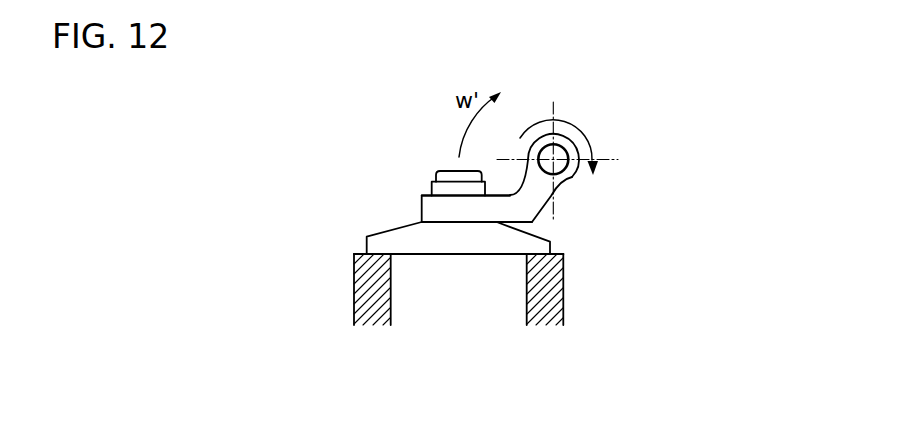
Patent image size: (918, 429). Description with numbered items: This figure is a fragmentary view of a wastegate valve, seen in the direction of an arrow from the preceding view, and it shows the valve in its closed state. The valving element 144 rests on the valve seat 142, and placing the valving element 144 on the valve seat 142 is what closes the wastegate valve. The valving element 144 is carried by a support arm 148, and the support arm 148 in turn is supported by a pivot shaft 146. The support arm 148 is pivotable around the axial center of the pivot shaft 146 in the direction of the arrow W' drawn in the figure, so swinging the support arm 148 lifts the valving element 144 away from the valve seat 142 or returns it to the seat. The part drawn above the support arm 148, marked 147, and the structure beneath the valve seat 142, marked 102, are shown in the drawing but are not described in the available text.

The housing base 102 is at (470, 308).
The valve seat 142 is at (356, 255).
The valving element 144 is at (520, 242).
The pivot shaft 146 is at (566, 171).
The cap block 147 is at (431, 188).
The support arm 148 is at (432, 210).